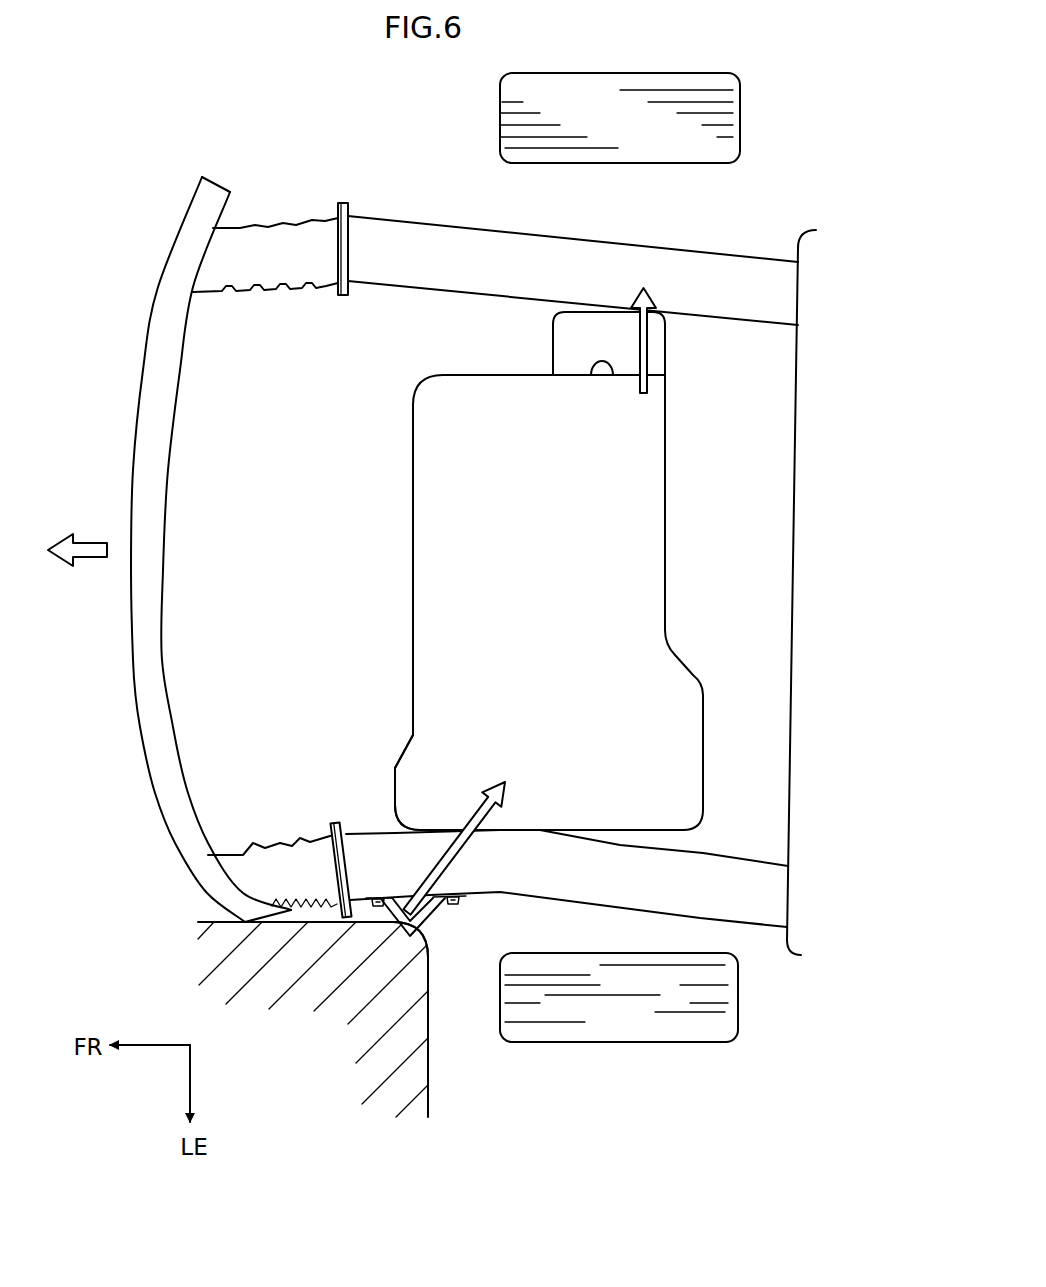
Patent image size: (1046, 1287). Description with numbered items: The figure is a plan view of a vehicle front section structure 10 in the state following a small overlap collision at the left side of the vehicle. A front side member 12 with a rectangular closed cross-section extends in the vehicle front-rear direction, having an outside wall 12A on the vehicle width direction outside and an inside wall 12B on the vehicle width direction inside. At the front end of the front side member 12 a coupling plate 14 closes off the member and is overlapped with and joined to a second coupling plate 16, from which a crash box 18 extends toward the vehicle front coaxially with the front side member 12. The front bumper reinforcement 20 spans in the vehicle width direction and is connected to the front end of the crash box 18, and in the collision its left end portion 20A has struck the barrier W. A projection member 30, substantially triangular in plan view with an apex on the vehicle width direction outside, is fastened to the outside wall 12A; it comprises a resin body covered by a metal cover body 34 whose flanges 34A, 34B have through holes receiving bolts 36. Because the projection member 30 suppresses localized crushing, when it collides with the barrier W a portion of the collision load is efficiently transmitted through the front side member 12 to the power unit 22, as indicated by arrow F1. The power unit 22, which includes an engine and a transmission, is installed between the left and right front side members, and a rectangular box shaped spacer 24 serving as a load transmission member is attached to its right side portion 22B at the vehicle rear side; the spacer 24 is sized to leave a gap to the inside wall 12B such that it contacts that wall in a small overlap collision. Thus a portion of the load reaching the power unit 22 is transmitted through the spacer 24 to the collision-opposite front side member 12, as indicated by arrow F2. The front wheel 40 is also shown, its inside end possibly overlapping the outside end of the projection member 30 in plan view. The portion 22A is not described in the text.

The vehicle front section structure 10 is at (456, 1034).
The front side member 12 is at (504, 592).
The outside wall 12A is at (747, 927).
The inside wall 12B is at (698, 317).
The coupling plate 14 is at (334, 560).
The coupling plate 16 is at (333, 280).
The crash box 18 is at (245, 286).
The front bumper reinforcement 20 is at (207, 611).
The left end portion 20A is at (271, 915).
The power unit 22 is at (508, 571).
The lower portion of energy absorbing body 22A is at (395, 768).
The right side portion 22B is at (599, 362).
The spacer 24 is at (562, 338).
The projection member 30 is at (427, 934).
The cover body 34 is at (443, 960).
The flange 34A is at (366, 897).
The flange 34B is at (464, 896).
The bolt 36 is at (380, 908).
The front wheel 40 is at (660, 148).
The arrow F1 is at (462, 833).
The arrow F2 is at (647, 360).
The barrier W is at (215, 921).